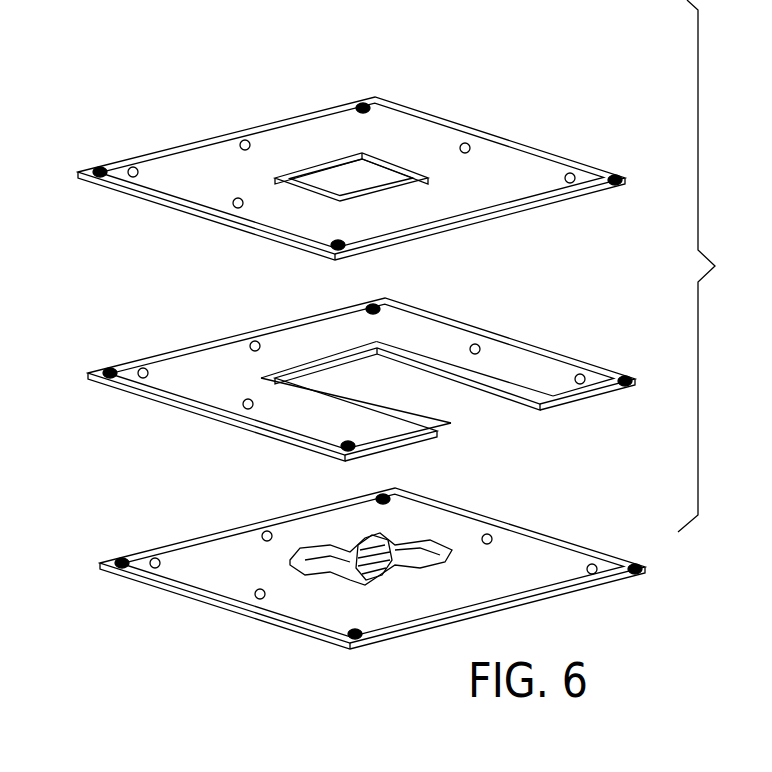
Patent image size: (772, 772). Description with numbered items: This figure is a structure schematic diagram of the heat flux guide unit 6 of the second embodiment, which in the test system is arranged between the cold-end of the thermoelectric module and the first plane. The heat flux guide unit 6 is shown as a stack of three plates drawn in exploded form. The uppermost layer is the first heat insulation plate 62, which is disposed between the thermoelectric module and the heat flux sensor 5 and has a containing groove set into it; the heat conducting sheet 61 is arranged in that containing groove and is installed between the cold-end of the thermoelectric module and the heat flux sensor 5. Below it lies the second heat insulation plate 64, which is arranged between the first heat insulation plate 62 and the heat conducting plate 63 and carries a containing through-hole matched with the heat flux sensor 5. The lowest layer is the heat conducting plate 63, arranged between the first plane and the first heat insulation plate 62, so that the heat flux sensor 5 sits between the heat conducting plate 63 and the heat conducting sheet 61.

The heat flux guide unit 6 is at (711, 266).
The heat conducting sheet 61 is at (358, 177).
The first heat insulation plate 62 is at (530, 177).
The heat conducting plate 63 is at (573, 557).
The second heat insulation plate 64 is at (558, 360).
The heat flux sensor 5 is at (328, 562).